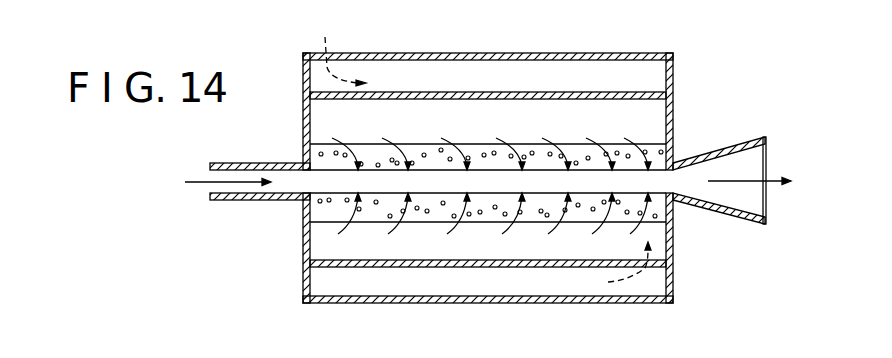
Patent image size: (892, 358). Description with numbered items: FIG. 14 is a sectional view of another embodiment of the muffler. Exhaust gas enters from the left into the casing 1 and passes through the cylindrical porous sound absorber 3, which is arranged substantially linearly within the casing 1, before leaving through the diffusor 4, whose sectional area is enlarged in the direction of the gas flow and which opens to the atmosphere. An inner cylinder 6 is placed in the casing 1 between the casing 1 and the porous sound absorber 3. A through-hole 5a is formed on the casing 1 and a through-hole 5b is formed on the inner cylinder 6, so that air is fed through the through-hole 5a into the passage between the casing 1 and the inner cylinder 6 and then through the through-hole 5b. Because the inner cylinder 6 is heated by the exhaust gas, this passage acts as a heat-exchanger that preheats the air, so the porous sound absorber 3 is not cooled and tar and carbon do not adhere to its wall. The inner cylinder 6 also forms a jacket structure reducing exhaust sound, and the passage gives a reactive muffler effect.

The casing 1 is at (548, 57).
The porous sound absorber 3 is at (575, 157).
The diffusor 4 is at (717, 155).
The through-hole 5a is at (329, 57).
The through-hole 5b is at (658, 250).
The inner cylinder 6 is at (607, 92).